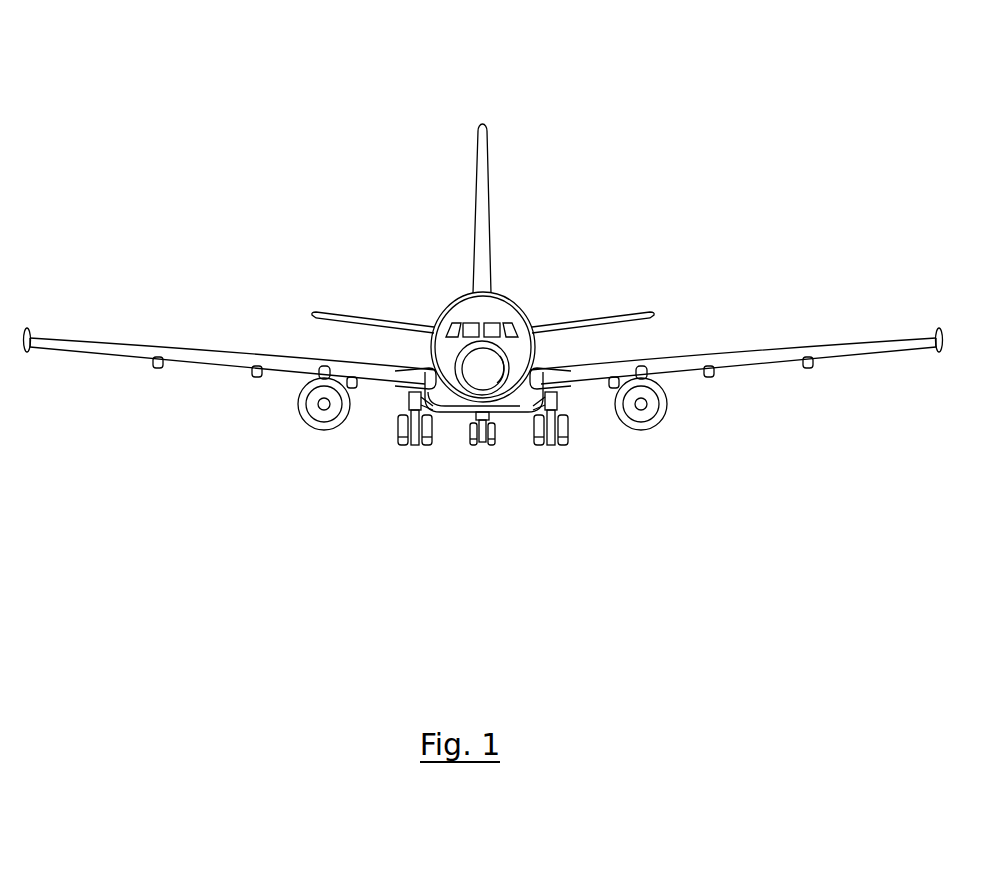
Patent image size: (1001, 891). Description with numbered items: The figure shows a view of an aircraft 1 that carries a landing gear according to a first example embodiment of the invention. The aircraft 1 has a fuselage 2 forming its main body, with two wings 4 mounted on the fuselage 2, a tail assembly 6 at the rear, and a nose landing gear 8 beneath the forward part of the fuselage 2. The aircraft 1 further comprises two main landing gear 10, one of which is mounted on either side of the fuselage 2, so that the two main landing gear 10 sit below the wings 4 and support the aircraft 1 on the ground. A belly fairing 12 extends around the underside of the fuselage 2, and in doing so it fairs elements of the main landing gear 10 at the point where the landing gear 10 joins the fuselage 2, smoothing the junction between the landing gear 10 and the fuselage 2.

The aircraft 1 is at (180, 82).
The fuselage 2 is at (513, 307).
The wings 4 is at (177, 353).
The tail assembly 6 is at (482, 267).
The nose landing gear 8 is at (485, 442).
The main landing gear 10 is at (384, 452).
The belly fairing 12 is at (445, 402).